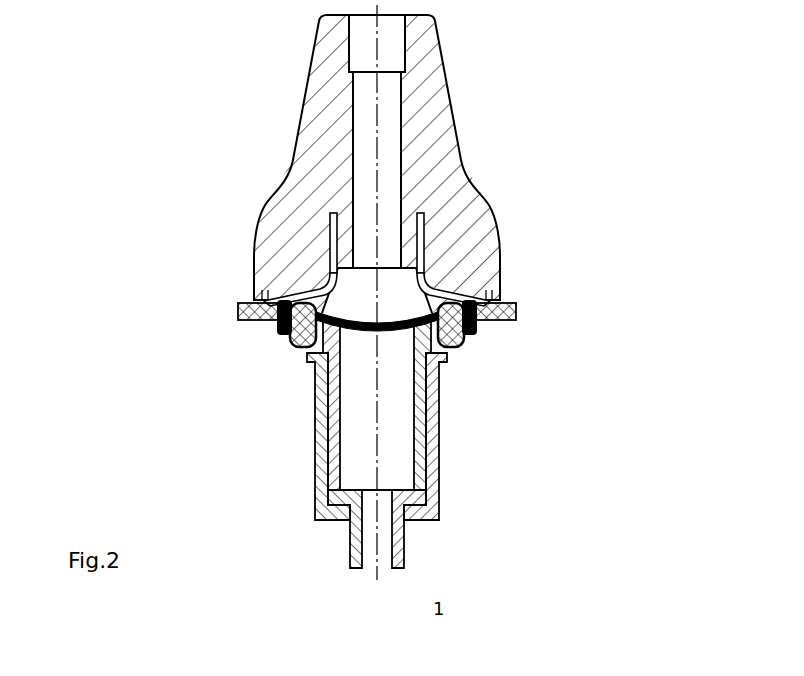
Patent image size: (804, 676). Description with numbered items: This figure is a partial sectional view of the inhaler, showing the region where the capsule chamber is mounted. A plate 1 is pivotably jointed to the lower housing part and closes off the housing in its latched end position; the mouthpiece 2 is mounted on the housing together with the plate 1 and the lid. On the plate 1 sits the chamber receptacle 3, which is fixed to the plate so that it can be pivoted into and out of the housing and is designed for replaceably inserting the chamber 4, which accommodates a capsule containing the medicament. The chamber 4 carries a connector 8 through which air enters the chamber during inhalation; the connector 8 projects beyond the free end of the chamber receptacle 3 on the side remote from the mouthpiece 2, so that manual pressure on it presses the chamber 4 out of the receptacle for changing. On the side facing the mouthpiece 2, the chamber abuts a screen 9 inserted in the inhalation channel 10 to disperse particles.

The plate 1 is at (515, 310).
The mouthpiece 2 is at (490, 208).
The chamber receptacle 3 is at (321, 414).
The chamber 4 is at (331, 447).
The connector 8 is at (368, 550).
The screen 9 is at (297, 335).
The inhalation channel 10 is at (390, 118).